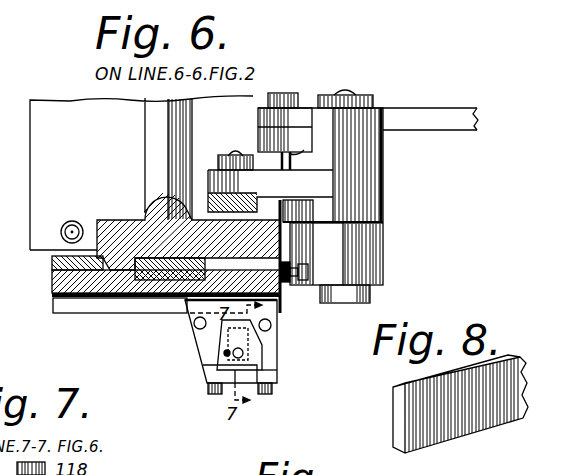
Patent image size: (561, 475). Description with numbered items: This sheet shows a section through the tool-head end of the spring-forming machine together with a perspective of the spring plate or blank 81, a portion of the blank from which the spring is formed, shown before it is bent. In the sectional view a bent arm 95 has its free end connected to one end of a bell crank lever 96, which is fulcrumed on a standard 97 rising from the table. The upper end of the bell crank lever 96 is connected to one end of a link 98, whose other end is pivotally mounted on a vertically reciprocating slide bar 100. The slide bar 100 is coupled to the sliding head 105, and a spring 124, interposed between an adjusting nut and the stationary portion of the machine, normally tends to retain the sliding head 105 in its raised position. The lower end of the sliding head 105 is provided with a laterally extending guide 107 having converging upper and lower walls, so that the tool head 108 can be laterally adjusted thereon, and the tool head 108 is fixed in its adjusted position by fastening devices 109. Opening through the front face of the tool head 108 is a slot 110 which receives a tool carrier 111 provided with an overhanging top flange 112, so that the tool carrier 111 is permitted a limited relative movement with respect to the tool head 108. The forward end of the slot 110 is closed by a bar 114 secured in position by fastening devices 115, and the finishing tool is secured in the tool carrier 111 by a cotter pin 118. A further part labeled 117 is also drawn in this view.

In FIG. 6, the bent arm 95 is at (419, 118).
In FIG. 6, the bell crank lever 96 is at (320, 196).
In FIG. 6, the standard 97 is at (128, 209).
In FIG. 6, the link 98 is at (262, 185).
In FIG. 6, the slide bar 100 is at (53, 268).
In FIG. 6, the sliding head 105 is at (53, 286).
In FIG. 6, the guide 107 is at (87, 304).
In FIG. 6, the tool head 108 is at (272, 345).
In FIG. 6, the fastening devices 109 is at (194, 325).
In FIG. 6, the slot 110 is at (255, 350).
In FIG. 6, the tool carrier 111 is at (236, 378).
In FIG. 6, the overhanging top flange 112 is at (234, 355).
In FIG. 6, the bar 114 is at (275, 382).
In FIG. 6, the fastening devices 115 is at (212, 396).
In FIG. 6, the lower block 117 is at (218, 370).
In FIG. 6, the cotter pin 118 is at (224, 353).
In FIG. 6, the spring 124 is at (70, 221).
In FIG. 8, the spring plate or blank 81 is at (487, 430).